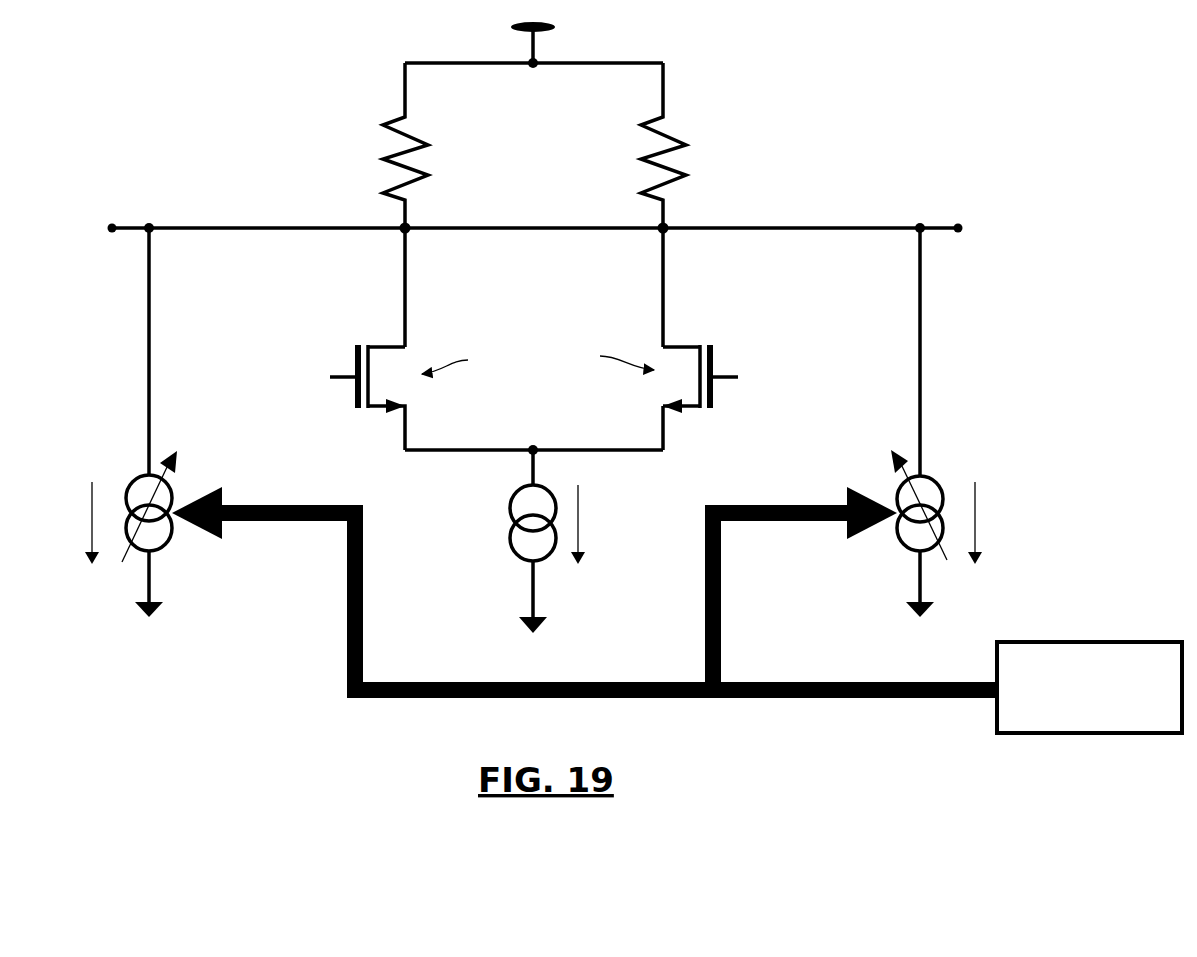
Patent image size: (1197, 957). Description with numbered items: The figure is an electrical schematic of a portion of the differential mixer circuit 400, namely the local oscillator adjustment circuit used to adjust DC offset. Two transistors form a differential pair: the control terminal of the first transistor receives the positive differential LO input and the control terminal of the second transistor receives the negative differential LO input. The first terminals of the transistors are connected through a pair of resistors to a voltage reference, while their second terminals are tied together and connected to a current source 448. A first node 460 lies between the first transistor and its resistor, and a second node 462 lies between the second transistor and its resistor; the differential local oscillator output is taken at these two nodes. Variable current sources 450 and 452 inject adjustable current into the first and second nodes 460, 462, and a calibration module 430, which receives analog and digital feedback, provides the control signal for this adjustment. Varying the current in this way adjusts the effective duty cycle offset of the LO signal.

The differential mixer circuit 400 is at (174, 80).
The first node 460 is at (402, 226).
The second node 462 is at (660, 228).
The variable current source 450 is at (238, 464).
The variable current source 452 is at (967, 455).
The current source 448 is at (612, 504).
The calibration module 430 is at (1077, 642).